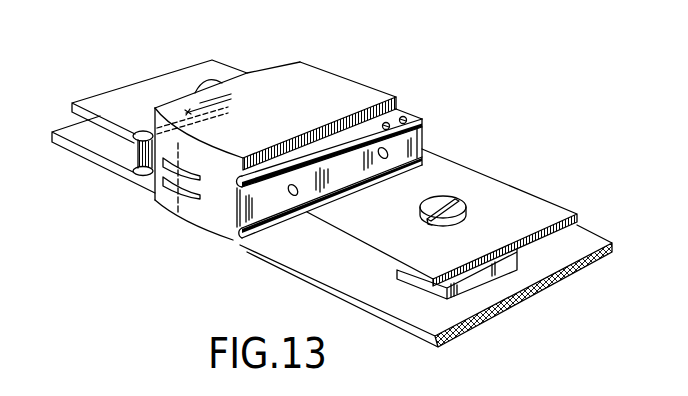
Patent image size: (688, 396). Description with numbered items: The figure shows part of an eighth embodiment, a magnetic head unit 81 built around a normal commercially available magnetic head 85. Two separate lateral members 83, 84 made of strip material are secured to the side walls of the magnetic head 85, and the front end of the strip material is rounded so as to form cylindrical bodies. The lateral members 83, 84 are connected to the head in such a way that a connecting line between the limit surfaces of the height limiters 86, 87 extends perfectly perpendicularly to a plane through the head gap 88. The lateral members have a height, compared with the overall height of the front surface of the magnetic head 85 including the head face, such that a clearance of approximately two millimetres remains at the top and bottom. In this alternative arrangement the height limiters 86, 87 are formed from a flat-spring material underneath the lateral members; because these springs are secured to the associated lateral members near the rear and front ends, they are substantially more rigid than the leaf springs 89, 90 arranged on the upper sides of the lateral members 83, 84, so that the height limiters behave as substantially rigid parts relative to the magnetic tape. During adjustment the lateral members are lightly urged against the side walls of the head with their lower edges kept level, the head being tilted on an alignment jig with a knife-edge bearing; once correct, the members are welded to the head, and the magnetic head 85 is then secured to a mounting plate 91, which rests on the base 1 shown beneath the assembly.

The board 1 is at (536, 278).
The magnetic head unit 81 is at (358, 70).
The lateral member 83 is at (337, 184).
The lateral member 84 is at (197, 130).
The magnetic head 85 is at (305, 73).
The height limiter 86 is at (239, 244).
The height limiter 87 is at (133, 174).
The head gap 88 is at (177, 208).
The leaf spring 89 is at (347, 143).
The leaf spring 90 is at (140, 130).
The mounting plate 91 is at (519, 199).